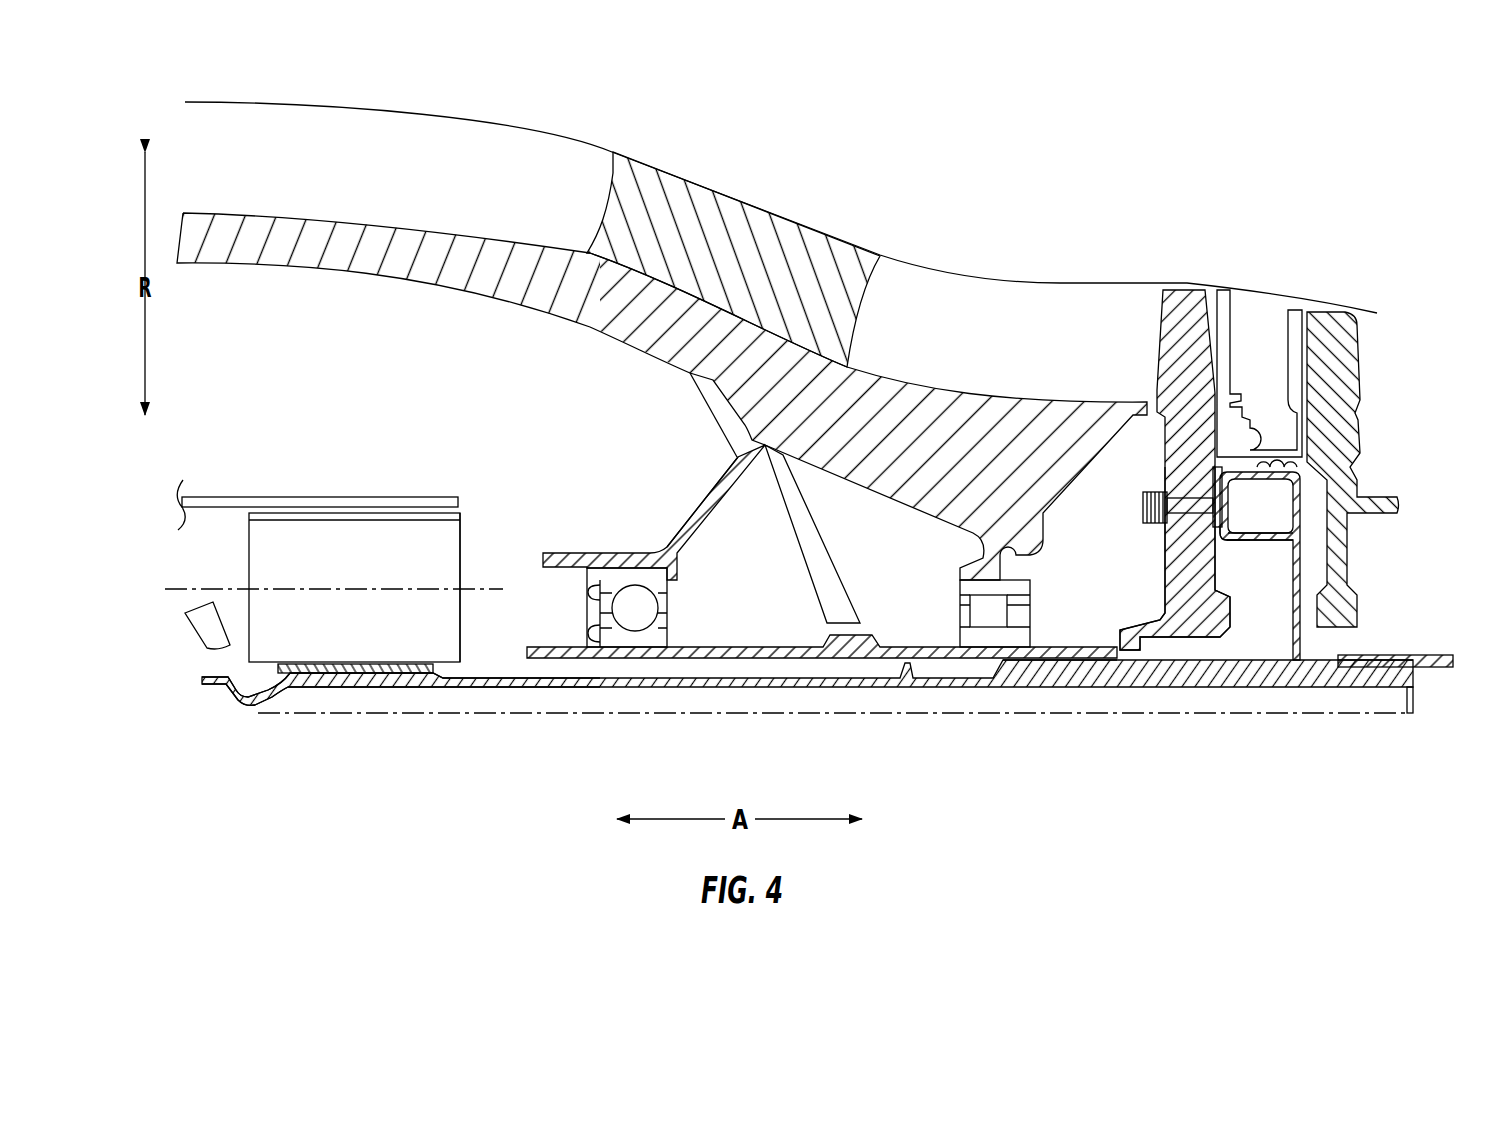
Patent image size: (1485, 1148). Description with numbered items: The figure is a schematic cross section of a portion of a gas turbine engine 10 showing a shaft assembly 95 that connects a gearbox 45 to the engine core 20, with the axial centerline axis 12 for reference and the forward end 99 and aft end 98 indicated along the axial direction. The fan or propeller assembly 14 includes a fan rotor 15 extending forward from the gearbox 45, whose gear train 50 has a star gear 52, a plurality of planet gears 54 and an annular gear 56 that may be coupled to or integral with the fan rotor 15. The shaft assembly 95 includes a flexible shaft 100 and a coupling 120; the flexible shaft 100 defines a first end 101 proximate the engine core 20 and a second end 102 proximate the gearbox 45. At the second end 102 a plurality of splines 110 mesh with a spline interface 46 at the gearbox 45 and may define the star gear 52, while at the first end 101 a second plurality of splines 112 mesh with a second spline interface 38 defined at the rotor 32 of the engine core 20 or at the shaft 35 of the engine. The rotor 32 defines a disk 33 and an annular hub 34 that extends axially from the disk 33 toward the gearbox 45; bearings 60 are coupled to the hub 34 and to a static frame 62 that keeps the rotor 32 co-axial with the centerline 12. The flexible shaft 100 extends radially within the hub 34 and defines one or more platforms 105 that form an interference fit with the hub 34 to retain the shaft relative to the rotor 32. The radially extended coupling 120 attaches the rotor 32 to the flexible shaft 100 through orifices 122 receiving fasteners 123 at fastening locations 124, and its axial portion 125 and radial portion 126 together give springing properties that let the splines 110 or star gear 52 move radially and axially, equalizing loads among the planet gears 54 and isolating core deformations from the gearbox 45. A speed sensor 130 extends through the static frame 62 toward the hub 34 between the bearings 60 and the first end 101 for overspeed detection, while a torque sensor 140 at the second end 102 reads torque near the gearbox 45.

The gas turbine engine 10 is at (1082, 152).
The axial centerline axis 12 is at (428, 716).
The fan or propeller assembly 14 is at (235, 355).
The fan rotor 15 is at (198, 500).
The engine core 20 is at (1320, 198).
The rotor 32 is at (1175, 383).
The disk 33 is at (1180, 557).
The annular hub 34 is at (700, 645).
The shaft 35 is at (1436, 655).
The second spline interface 38 is at (1345, 666).
The gearbox 45 is at (410, 443).
The spline interface 46 is at (405, 668).
The gear train 50 is at (268, 543).
The star gear 52 is at (433, 672).
The planet gears 54 is at (437, 571).
The annular gear 56 is at (420, 503).
The bearings 60 is at (635, 598).
The static frame 62 is at (712, 381).
The shaft assembly 95 is at (518, 727).
The aft end 98 is at (1408, 448).
The forward end 99 is at (98, 473).
The flexible shaft 100 is at (765, 683).
The first end 101 is at (1358, 720).
The second end 102 is at (192, 722).
The platforms 105 is at (1100, 666).
The splines 110 is at (318, 677).
The second plurality of splines 112 is at (1392, 666).
The coupling 120 is at (1300, 645).
The orifices 122 is at (1205, 508).
The fasteners 123 is at (1148, 490).
The fastening locations 124 is at (1216, 521).
The axial portion 125 is at (1255, 541).
The radial portion 126 is at (1224, 490).
The speed sensor 130 is at (813, 560).
The torque sensor 140 is at (208, 622).